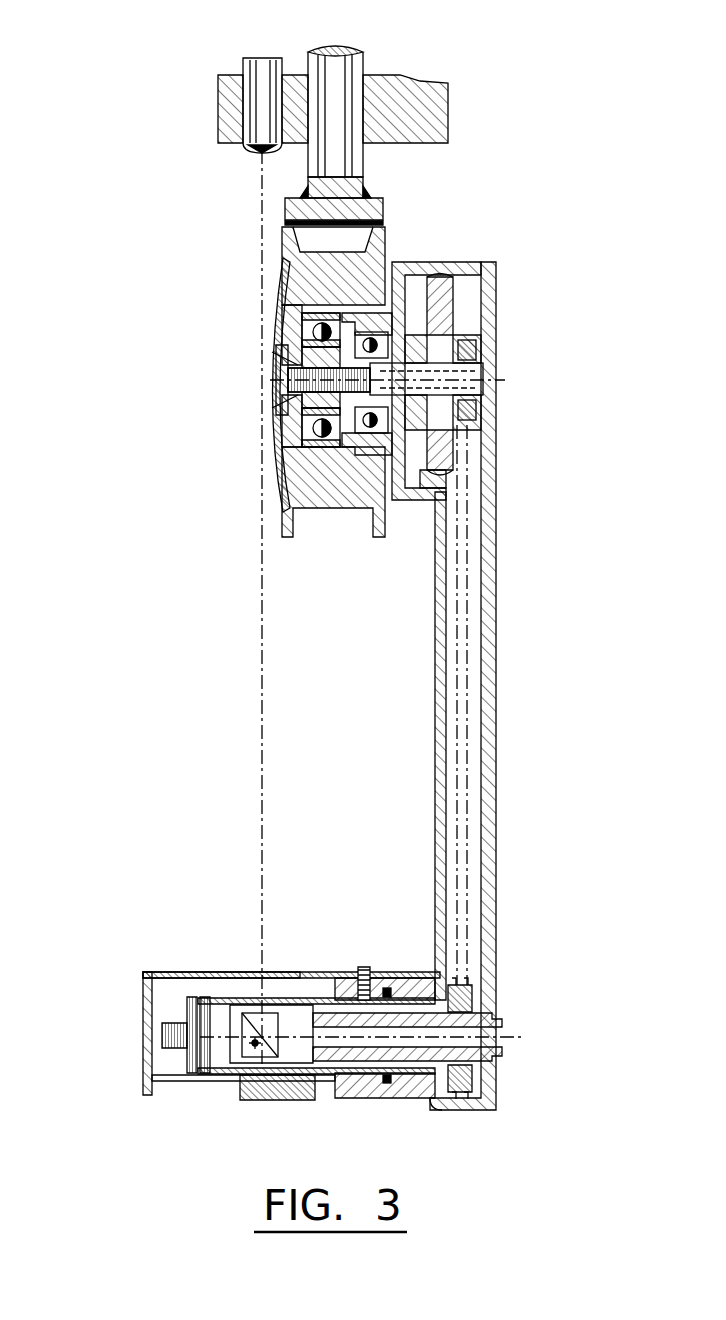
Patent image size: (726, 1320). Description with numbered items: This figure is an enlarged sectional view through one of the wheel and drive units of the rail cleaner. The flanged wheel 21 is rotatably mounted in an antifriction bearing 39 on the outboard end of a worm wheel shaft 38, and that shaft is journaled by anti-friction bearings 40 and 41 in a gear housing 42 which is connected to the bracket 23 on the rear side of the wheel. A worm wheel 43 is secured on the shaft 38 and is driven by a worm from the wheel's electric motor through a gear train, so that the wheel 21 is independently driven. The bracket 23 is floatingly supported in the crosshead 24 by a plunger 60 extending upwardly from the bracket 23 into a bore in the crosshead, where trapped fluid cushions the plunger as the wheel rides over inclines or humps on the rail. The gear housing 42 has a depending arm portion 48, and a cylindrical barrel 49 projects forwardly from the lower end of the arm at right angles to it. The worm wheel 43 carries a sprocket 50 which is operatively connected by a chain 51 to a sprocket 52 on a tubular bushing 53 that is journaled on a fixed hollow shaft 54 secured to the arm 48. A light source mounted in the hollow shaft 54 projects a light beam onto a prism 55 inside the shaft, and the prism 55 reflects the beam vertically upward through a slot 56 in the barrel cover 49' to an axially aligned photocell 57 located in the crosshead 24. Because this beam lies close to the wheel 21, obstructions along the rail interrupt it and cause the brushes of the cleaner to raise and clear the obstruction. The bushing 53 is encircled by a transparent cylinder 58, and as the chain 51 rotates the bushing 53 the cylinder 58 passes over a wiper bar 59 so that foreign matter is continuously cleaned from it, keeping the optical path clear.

The flanged wheel 21 is at (290, 250).
The bracket 23 is at (292, 208).
The crosshead 24 is at (438, 105).
The worm wheel shaft 38 is at (470, 377).
The antifriction bearing 39 is at (305, 430).
The anti-friction bearing 40 is at (370, 433).
The anti-friction bearing 41 is at (476, 357).
The gear housing 42 is at (450, 264).
The worm wheel 43 is at (440, 298).
The depending arm portion 48 is at (437, 646).
The cylindrical barrel 49 is at (291, 982).
The barrel cover 49' is at (200, 925).
The sprocket 50 is at (470, 445).
The chain 51 is at (460, 583).
The sprocket 52 is at (472, 991).
The tubular bushing 53 is at (476, 1002).
The fixed hollow shaft 54 is at (502, 1047).
The prism 55 is at (268, 1028).
The slot 56 is at (302, 976).
The photocell 57 is at (247, 157).
The transparent cylinder 58 is at (277, 1000).
The wiper bar 59 is at (270, 1100).
The plunger 60 is at (347, 72).